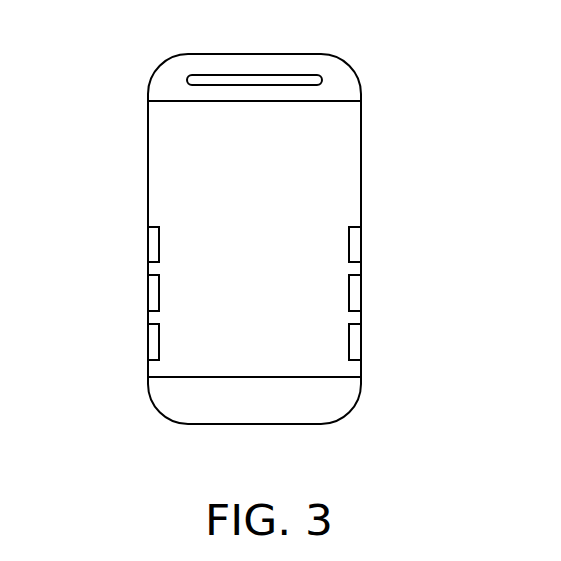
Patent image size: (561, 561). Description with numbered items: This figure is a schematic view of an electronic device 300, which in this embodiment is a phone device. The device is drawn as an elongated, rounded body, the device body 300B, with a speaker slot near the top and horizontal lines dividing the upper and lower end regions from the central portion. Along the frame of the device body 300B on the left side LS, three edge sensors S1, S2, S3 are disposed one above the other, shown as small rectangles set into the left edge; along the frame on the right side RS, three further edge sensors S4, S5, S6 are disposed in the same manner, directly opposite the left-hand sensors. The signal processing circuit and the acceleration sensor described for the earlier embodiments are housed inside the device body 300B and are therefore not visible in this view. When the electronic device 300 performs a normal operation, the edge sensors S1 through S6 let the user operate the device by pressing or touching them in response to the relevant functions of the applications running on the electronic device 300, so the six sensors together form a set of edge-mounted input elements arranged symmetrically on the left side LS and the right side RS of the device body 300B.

The electronic device 300 is at (445, 463).
The device body 300B is at (322, 155).
The left side LS is at (146, 172).
The right side RS is at (363, 172).
The edge sensor S1 is at (148, 245).
The edge sensor S2 is at (148, 293).
The edge sensor S3 is at (148, 342).
The edge sensor S4 is at (361, 245).
The edge sensor S5 is at (361, 293).
The edge sensor S6 is at (361, 342).